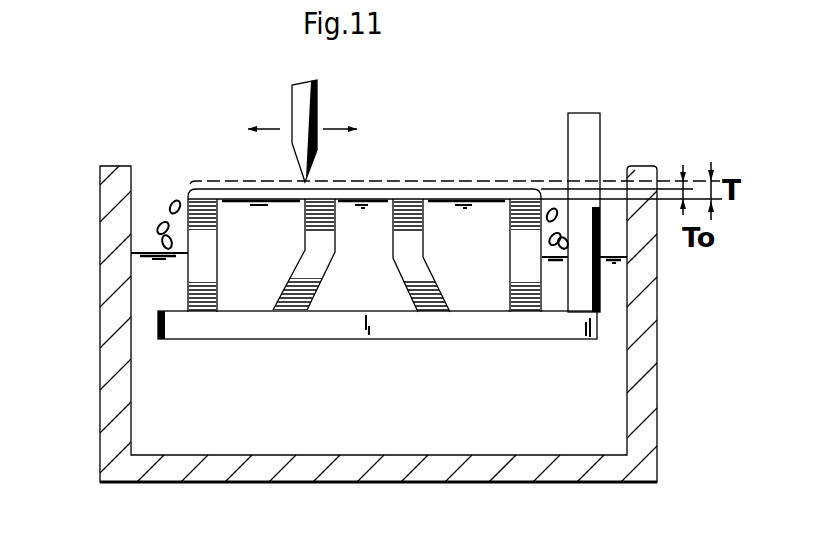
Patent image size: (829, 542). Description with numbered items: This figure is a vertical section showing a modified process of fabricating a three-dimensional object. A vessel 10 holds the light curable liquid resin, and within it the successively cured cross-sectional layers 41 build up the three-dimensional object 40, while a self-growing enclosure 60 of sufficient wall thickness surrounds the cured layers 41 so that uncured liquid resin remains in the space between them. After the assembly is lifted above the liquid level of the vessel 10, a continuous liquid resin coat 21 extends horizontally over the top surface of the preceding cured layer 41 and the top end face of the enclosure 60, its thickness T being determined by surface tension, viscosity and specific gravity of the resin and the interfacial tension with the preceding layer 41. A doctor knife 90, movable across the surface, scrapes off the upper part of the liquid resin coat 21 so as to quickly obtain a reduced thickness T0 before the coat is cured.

The vessel 10 is at (648, 362).
The liquid resin coat 21 is at (375, 195).
The three-dimensional object 40 is at (325, 277).
The cured layer 41 is at (418, 207).
The self-growing enclosure 60 is at (193, 262).
The doctor knife 90 is at (297, 108).